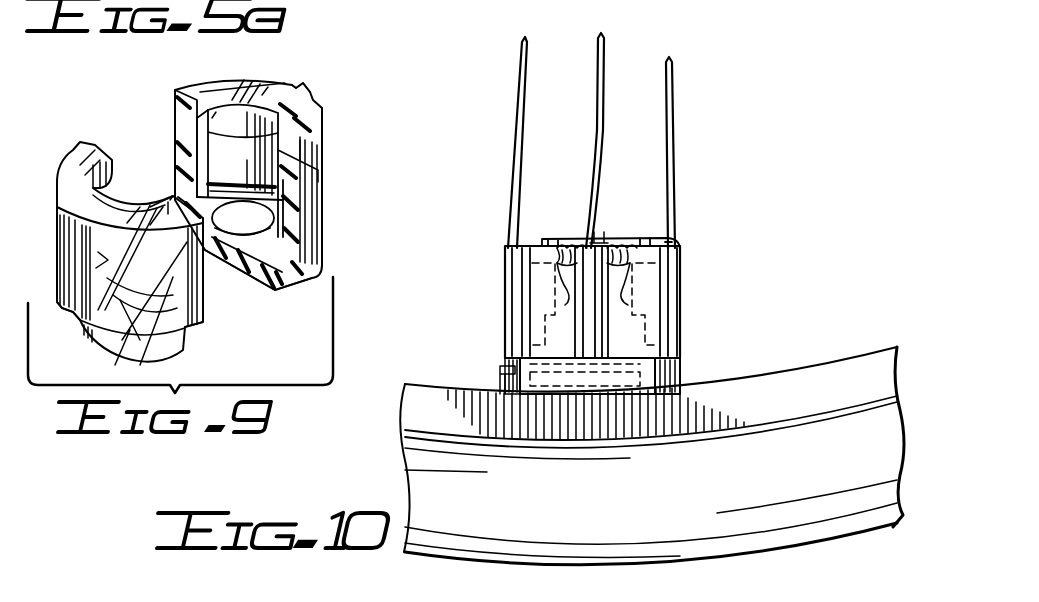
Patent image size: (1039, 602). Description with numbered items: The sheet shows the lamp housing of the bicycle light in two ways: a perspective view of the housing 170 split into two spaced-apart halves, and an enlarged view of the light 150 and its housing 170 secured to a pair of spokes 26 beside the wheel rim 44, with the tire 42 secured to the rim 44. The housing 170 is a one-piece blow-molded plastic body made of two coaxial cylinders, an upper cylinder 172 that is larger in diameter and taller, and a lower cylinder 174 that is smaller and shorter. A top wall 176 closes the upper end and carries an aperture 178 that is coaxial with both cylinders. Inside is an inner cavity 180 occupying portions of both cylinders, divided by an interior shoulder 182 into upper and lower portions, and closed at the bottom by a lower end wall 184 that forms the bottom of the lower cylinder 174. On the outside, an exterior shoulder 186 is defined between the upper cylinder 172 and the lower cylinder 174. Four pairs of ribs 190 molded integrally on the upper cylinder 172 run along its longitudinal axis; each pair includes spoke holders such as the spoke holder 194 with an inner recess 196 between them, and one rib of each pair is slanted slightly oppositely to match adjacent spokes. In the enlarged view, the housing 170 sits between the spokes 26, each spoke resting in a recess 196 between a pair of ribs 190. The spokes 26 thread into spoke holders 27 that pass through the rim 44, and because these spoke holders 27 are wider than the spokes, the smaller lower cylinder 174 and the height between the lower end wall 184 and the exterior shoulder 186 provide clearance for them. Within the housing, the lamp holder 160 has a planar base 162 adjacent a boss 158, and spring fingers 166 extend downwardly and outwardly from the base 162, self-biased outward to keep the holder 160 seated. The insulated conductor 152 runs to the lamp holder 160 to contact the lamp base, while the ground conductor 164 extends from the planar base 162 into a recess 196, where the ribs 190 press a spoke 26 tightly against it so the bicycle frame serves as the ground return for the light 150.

In FIG. 10, the spokes 26 is at (517, 135).
In FIG. 10, the spoke holder 27 is at (500, 386).
In FIG. 10, the tire 42 is at (622, 507).
In FIG. 10, the rim 44 is at (787, 416).
In FIG. 10, the light 150 is at (576, 193).
In FIG. 10, the conductor 152 is at (598, 121).
In FIG. 10, the boss 158 is at (605, 229).
In FIG. 10, the lamp holder 160 is at (574, 225).
In FIG. 10, the planar base 162 is at (566, 241).
In FIG. 10, the ground conductor 164 is at (640, 241).
In FIG. 10, the spring fingers 166 is at (554, 296).
In FIG. 9, the housing 170 is at (326, 128).
In FIG. 9, the upper cylinder 172 is at (320, 181).
In FIG. 10, the upper cylinder 172 is at (675, 253).
In FIG. 9, the lower cylinder 174 is at (284, 280).
In FIG. 10, the lower cylinder 174 is at (515, 373).
In FIG. 9, the top wall 176 is at (251, 88).
In FIG. 9, the aperture 178 is at (212, 118).
In FIG. 10, the aperture 178 is at (631, 297).
In FIG. 9, the inner cavity 180 is at (210, 152).
In FIG. 9, the interior shoulder 182 is at (208, 186).
In FIG. 9, the lower end wall 184 is at (245, 260).
In FIG. 10, the lower end wall 184 is at (580, 394).
In FIG. 9, the exterior shoulder 186 is at (193, 327).
In FIG. 10, the exterior shoulder 186 is at (668, 364).
In FIG. 9, the ribs 190 is at (313, 100).
In FIG. 10, the ribs 190 is at (508, 316).
In FIG. 9, the spoke holder 194 is at (63, 235).
In FIG. 9, the inner recess 196 is at (70, 308).